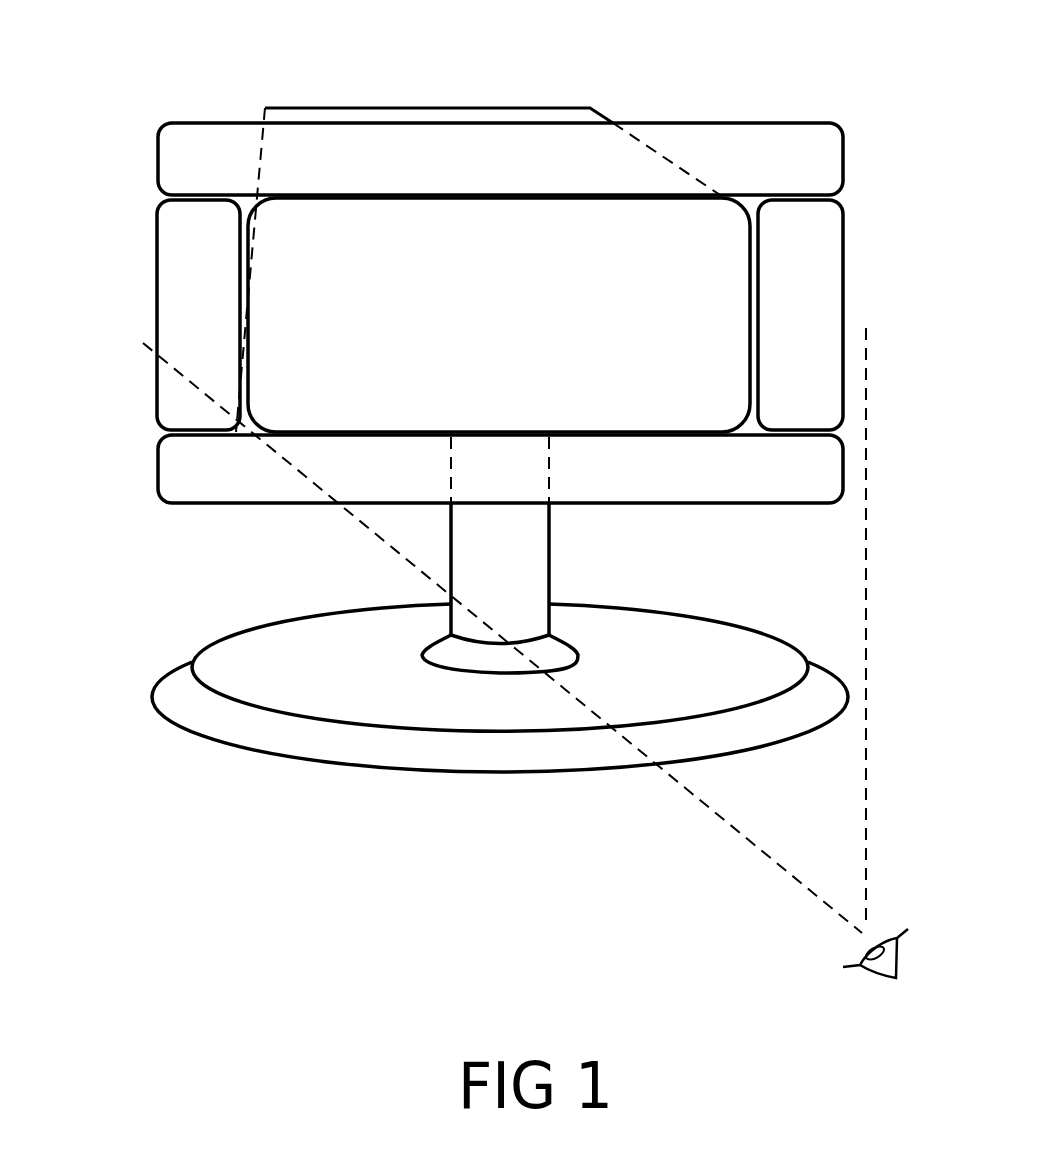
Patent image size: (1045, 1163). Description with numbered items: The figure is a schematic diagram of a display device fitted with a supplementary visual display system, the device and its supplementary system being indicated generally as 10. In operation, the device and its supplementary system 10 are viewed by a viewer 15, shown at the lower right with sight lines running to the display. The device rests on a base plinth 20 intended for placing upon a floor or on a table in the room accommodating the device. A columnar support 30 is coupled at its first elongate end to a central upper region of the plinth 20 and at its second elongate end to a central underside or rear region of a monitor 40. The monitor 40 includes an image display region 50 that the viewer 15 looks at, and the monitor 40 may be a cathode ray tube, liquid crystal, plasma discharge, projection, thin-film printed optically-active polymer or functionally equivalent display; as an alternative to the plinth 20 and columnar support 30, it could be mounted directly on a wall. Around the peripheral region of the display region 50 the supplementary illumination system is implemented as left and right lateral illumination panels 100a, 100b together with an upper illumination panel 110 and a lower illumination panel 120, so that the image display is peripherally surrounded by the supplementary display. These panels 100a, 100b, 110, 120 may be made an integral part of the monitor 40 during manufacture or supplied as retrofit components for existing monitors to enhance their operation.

The display device and supplementary visual display system 10 is at (146, 747).
The viewer 15 is at (838, 958).
The base plinth 20 is at (270, 637).
The columnar support 30 is at (525, 556).
The monitor 40 is at (477, 102).
The image display region 50 is at (520, 332).
The left lateral illumination panel 100a is at (172, 253).
The right lateral illumination panel 100b is at (818, 252).
The upper illumination panel 110 is at (727, 140).
The lower illumination panel 120 is at (720, 482).